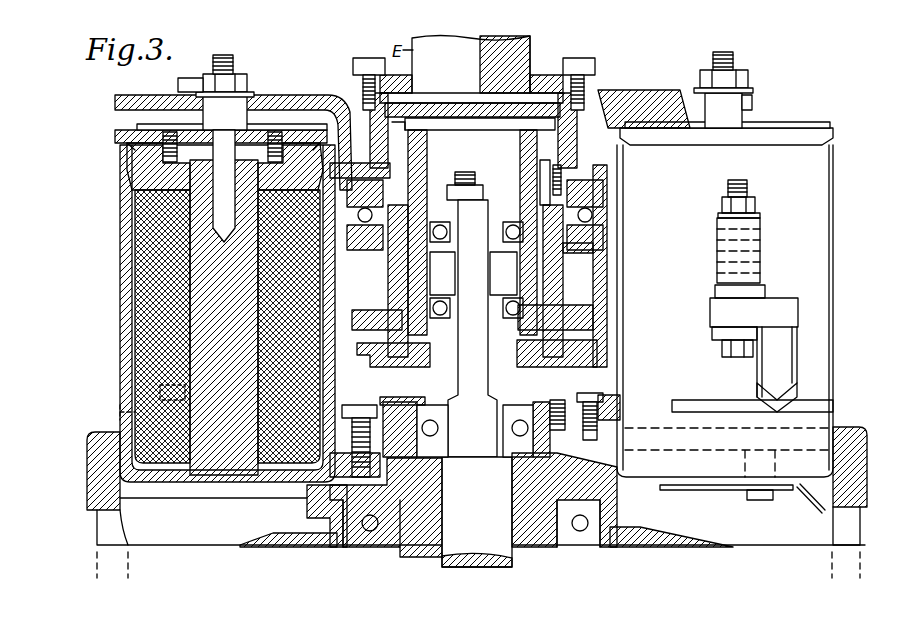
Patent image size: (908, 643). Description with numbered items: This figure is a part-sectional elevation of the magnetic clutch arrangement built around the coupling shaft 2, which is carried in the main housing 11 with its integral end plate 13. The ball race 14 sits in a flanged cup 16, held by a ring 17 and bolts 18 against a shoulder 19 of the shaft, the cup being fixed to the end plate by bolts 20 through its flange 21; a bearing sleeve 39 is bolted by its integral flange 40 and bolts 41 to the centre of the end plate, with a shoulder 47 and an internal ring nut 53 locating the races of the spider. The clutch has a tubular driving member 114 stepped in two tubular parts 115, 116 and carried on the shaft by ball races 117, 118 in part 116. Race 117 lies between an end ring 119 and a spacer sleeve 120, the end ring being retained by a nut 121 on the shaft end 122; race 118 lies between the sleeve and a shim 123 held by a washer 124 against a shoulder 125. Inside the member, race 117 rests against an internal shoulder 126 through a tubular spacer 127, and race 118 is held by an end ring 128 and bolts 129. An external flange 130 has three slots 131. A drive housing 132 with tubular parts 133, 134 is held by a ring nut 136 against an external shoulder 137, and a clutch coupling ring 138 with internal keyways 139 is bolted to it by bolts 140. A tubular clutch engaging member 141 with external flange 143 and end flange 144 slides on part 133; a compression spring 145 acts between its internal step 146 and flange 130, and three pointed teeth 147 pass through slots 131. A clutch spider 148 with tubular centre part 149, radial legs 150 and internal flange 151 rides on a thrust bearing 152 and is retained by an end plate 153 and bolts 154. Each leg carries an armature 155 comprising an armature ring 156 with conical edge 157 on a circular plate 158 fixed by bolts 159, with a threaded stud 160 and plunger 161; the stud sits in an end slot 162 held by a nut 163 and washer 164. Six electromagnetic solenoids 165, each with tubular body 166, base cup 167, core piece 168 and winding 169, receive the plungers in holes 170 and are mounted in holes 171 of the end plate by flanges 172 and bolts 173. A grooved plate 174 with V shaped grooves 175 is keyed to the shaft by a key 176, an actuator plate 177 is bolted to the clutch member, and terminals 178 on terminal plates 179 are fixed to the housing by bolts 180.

The coupling shaft 2 is at (480, 535).
The main cylindrical housing 11 is at (855, 477).
The end plate 13 is at (840, 405).
The ball race 14 is at (488, 400).
The flanged cup 16 is at (445, 428).
The ring 17 is at (545, 400).
The bolts 18 is at (565, 398).
The shoulder 19 is at (445, 460).
The bolts 20 is at (615, 414).
The flange 21 is at (612, 397).
The bearing sleeve 39 is at (412, 535).
The integral flange 40 is at (615, 462).
The bolts 41 is at (378, 405).
The shoulder 47 is at (420, 498).
The internal ring nut 53 is at (650, 497).
The tubular driving member 114 is at (420, 157).
The tubular part 115 is at (420, 141).
The tubular part 116 is at (400, 296).
The ball race 117 is at (477, 269).
The ball race 118 is at (450, 325).
The end ring 119 is at (612, 222).
The spacer sleeve 120 is at (477, 286).
The nut 121 is at (463, 182).
The end 122 is at (530, 152).
The shim 123 is at (522, 336).
The washer 124 is at (432, 395).
The shoulder 125 is at (456, 358).
The internal shoulder 126 is at (378, 280).
The tubular spacer 127 is at (500, 302).
The end ring 128 is at (410, 395).
The bolts 129 is at (375, 378).
The external flange 130 is at (530, 173).
The rectangular circumferential slots 131 is at (605, 305).
The drive housing 132 is at (602, 110).
The tubular part 133 is at (612, 118).
The tubular part 134 is at (448, 233).
The ring nut 136 is at (527, 140).
The external shoulder 137 is at (450, 256).
The clutch coupling ring 138 is at (545, 77).
The internal keyways 139 is at (471, 65).
The bolts 140 is at (369, 60).
The tubular clutch engaging member 141 is at (372, 300).
The external flange 143 is at (610, 252).
The external end flange 144 is at (606, 272).
The compression spring 145 is at (605, 288).
The internal step 146 is at (606, 196).
The pointed teeth 147 is at (605, 322).
The clutch spider 148 is at (318, 100).
The tubular centre part 149 is at (290, 192).
The radial legs 150 is at (262, 95).
The internal flange 151 is at (425, 135).
The thrust bearing 152 is at (372, 262).
The end plate 153 is at (300, 179).
The bolts 154 is at (610, 180).
The armature 155 is at (120, 136).
The armature ring 156 is at (192, 168).
The outer conical edge 157 is at (132, 142).
The circular plate 158 is at (137, 126).
The bolts 159 is at (277, 135).
The central threaded stud 160 is at (223, 128).
The central plunger 161 is at (220, 200).
The end slot 162 is at (186, 88).
The nut 163 is at (218, 76).
The washer 164 is at (250, 92).
The electromagnetic solenoids 165 is at (125, 283).
The tubular body 166 is at (205, 312).
The base cup 167 is at (218, 482).
The central cylindrical core piece 168 is at (175, 318).
The solenoid winding 169 is at (275, 262).
The complementary holes 170 is at (220, 237).
The holes 171 is at (108, 447).
The flanges 172 is at (118, 412).
The bolts 173 is at (140, 380).
The grooved plate 174 is at (596, 398).
The V shaped grooves 175 is at (365, 360).
The key 176 is at (490, 370).
The actuator plate 177 is at (486, 110).
The terminals 178 is at (756, 195).
The terminal plates 179 is at (798, 320).
The bolts 180 is at (775, 303).